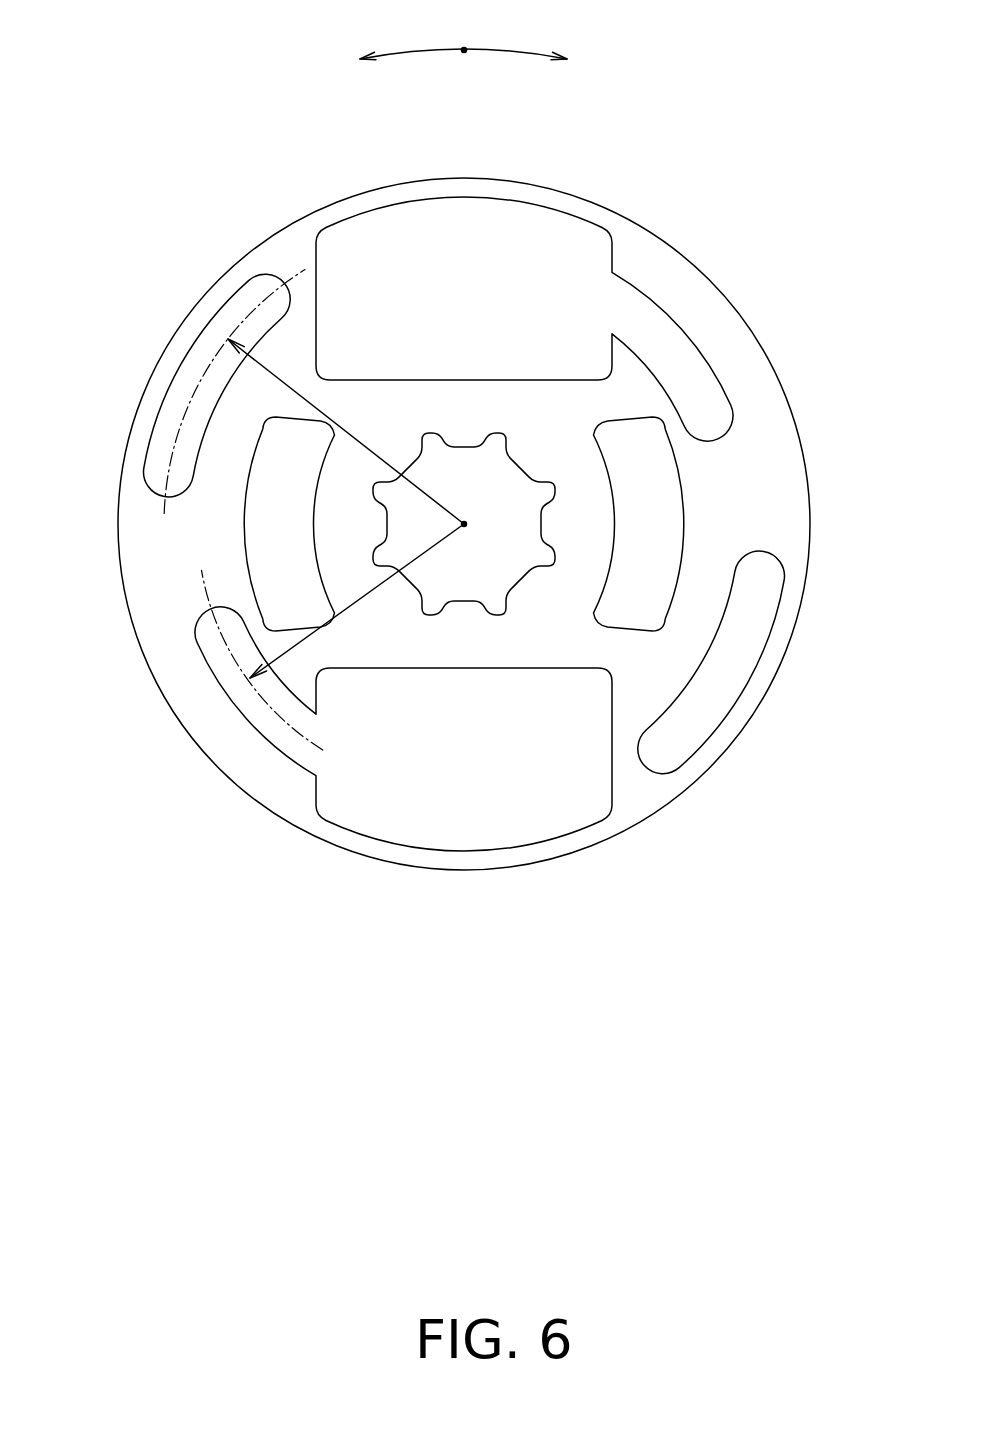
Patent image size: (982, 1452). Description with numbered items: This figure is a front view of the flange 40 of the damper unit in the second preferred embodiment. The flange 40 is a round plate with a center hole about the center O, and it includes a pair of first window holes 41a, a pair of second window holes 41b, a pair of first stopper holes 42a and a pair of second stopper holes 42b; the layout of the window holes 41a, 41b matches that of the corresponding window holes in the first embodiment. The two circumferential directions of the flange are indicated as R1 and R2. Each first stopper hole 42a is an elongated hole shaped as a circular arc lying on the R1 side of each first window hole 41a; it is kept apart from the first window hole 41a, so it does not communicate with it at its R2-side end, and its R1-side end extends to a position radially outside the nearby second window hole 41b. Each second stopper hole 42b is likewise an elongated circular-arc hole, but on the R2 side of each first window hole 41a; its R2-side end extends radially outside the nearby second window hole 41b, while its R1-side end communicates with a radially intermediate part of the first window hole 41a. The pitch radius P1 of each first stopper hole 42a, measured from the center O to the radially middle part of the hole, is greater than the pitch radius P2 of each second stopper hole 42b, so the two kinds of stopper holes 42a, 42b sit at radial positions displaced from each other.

The flange 40 is at (137, 563).
The first window hole 41a is at (450, 205).
The second window hole 41b is at (247, 562).
The first stopper hole 42a is at (252, 292).
The second stopper hole 42b is at (668, 308).
The center axis O is at (466, 523).
The pitch radius of first stopper hole P1 is at (314, 397).
The pitch radius of second stopper hole P2 is at (333, 637).
The circumferential direction R1 is at (463, 33).
The circumferential direction R2 is at (533, 33).